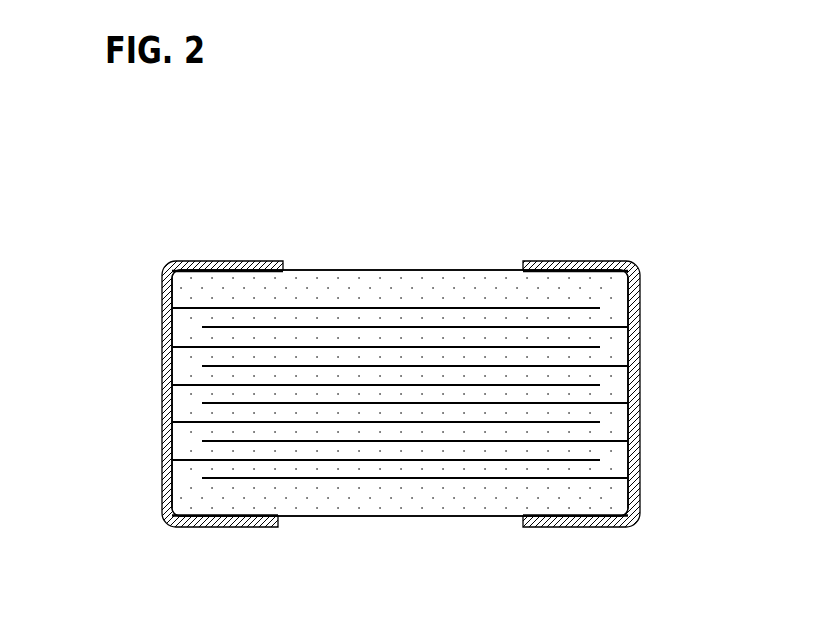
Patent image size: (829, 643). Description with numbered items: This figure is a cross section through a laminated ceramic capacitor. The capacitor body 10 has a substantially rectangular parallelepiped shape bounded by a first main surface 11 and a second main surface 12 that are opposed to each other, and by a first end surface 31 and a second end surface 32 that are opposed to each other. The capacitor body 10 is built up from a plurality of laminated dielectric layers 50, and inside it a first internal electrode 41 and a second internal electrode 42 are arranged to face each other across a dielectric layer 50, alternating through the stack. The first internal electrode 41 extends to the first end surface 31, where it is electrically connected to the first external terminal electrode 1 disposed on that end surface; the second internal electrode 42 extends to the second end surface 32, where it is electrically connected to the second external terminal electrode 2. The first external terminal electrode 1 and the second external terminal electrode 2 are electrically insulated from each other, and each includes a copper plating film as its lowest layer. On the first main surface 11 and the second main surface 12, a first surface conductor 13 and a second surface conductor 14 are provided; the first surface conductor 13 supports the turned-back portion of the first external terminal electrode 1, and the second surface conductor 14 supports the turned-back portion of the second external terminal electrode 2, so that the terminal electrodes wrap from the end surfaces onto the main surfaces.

The first external terminal electrode 1 is at (223, 261).
The second external terminal electrode 2 is at (578, 261).
The capacitor body 10 is at (482, 268).
The first main surface 11 is at (393, 268).
The second main surface 12 is at (383, 518).
The first surface conductor 13 is at (240, 261).
The second surface conductor 14 is at (560, 261).
The first end surface 31 is at (162, 445).
The second end surface 32 is at (640, 457).
The first internal electrode 41 is at (193, 380).
The second internal electrode 42 is at (597, 402).
The dielectric layer 50 is at (244, 397).